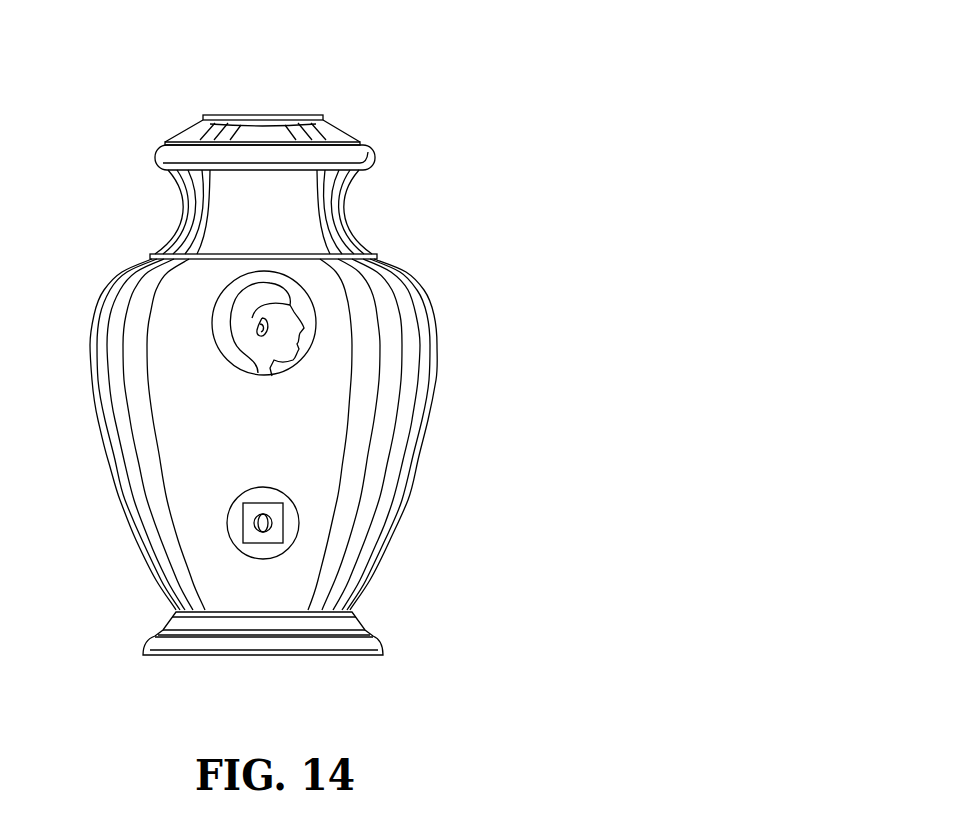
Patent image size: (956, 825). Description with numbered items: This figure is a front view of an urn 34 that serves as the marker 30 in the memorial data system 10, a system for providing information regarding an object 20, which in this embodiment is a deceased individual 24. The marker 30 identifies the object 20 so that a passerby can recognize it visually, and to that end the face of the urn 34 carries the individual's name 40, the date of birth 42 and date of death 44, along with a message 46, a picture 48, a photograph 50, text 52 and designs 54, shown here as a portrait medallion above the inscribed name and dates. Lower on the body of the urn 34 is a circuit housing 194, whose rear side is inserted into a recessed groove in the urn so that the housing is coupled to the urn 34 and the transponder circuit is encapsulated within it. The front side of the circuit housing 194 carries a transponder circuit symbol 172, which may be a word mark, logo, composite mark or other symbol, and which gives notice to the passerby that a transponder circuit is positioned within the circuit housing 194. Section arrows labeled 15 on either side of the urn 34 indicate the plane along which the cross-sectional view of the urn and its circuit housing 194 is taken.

The memorial data system 10 is at (562, 33).
The object 20 is at (594, 61).
The deceased individual 24 is at (631, 88).
The marker 30 is at (428, 335).
The urn 34 is at (428, 378).
The individual's name 40 is at (190, 393).
The date of birth 42 is at (193, 428).
The date of death 44 is at (340, 422).
The message 46 is at (232, 433).
The picture 48 is at (240, 303).
The photograph 50 is at (293, 305).
The text 52 is at (208, 378).
The designs 54 is at (302, 315).
The section line 15- 15 is at (123, 522).
The transponder circuit symbol 172 is at (260, 532).
The circuit housing 194 is at (283, 543).